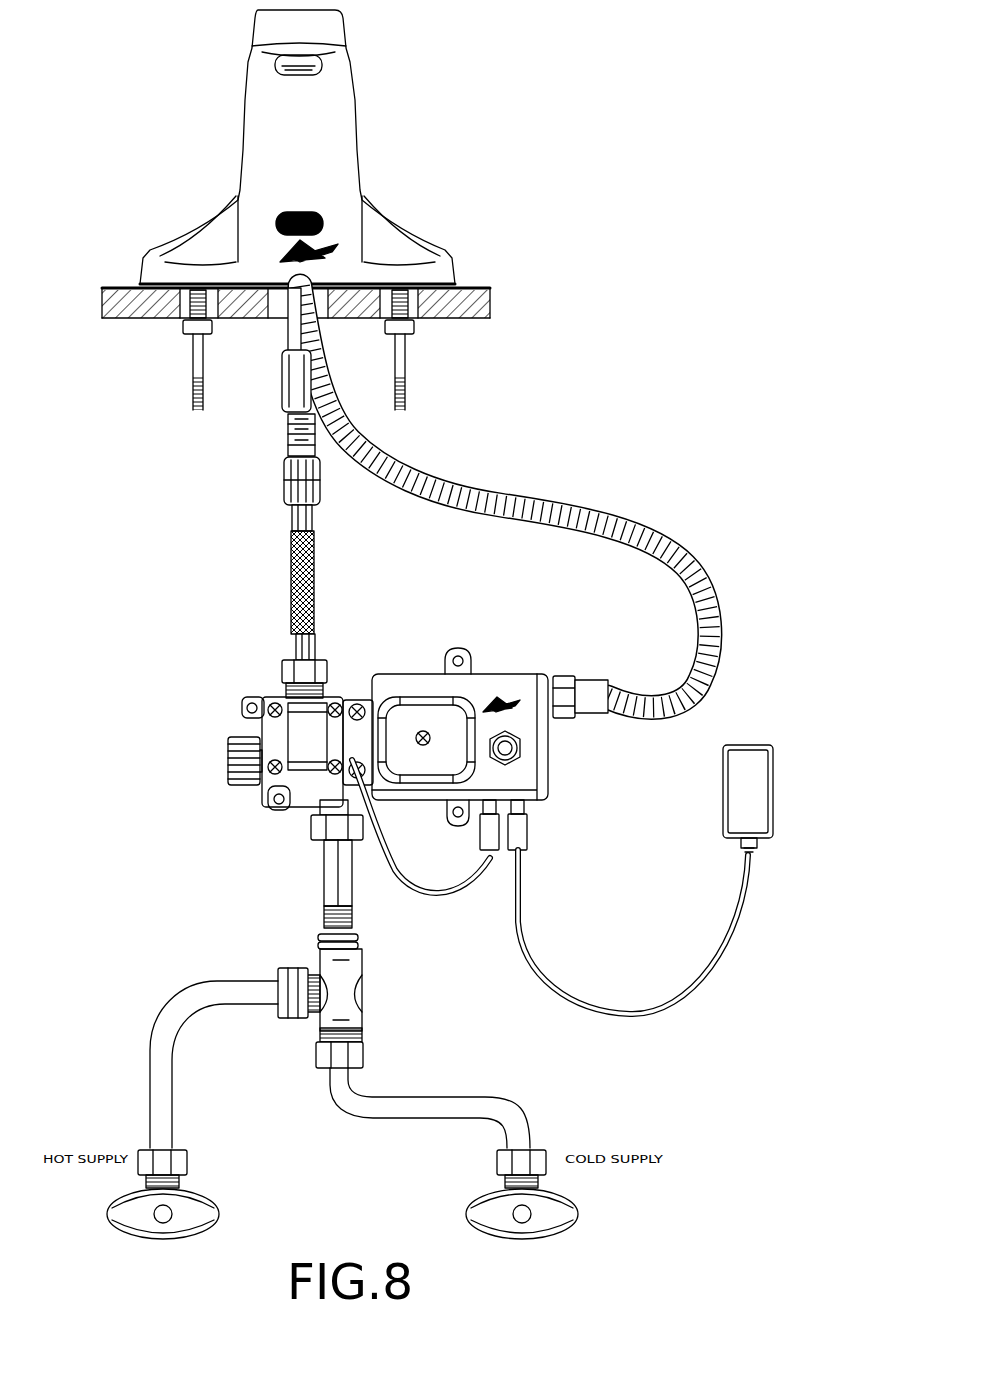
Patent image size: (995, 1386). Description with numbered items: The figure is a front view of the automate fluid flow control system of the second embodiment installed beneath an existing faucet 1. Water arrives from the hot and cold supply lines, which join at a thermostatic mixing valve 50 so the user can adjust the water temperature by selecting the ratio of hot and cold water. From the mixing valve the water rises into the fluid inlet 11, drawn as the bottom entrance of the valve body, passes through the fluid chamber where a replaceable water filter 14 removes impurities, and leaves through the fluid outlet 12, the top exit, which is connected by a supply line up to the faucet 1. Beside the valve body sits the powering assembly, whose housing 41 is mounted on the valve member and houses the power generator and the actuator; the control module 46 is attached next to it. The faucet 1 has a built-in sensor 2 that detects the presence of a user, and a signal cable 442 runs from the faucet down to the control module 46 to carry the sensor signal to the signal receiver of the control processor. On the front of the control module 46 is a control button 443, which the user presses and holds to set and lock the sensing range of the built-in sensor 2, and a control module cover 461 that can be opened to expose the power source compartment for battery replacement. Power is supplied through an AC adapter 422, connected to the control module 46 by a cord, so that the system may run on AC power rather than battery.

The faucet 1 is at (328, 143).
The built-in sensor 2 is at (312, 212).
The signal cable 442 is at (668, 540).
The control module cover 461 is at (427, 718).
The control button 443 is at (513, 740).
The fluid outlet 12 is at (275, 684).
The water filter 14 is at (242, 763).
The housing 41 is at (308, 745).
The fluid inlet 11 is at (320, 842).
The AC adapter 422 is at (760, 780).
The control module 46 is at (540, 740).
The thermostatic mixing valve 50 is at (350, 1006).